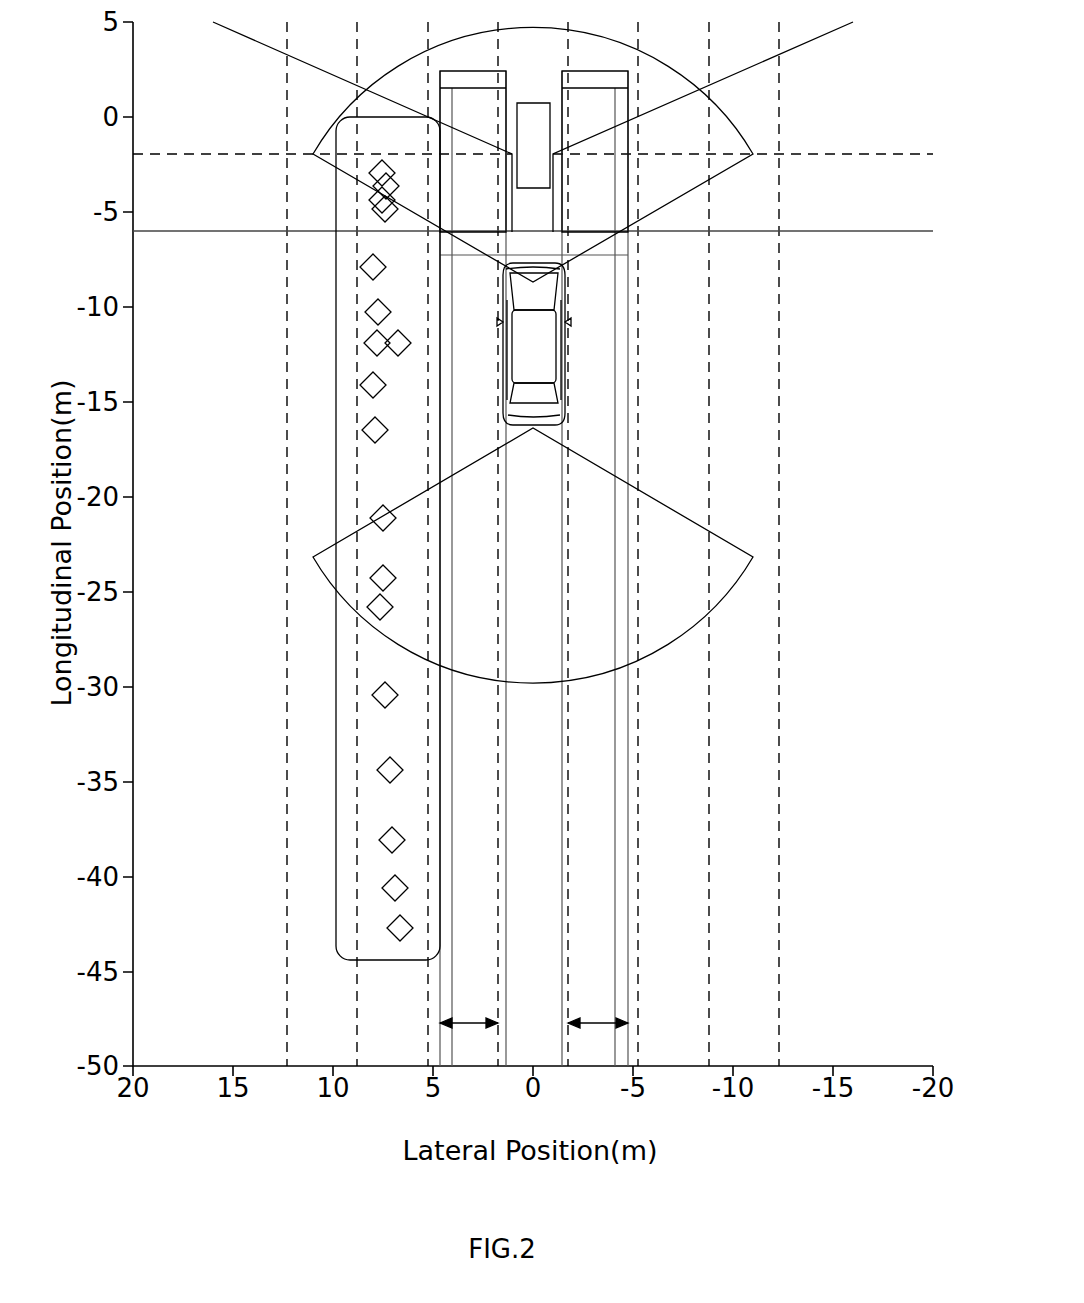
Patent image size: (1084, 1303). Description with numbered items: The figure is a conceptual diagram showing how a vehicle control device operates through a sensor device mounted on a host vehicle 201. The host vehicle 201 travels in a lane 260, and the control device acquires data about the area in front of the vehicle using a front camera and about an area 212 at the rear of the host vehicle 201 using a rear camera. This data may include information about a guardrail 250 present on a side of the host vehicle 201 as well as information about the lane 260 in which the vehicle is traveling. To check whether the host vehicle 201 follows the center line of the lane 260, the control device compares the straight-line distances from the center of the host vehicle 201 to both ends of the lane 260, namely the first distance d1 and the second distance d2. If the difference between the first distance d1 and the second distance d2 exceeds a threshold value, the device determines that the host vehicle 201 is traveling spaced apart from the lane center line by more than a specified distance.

The host vehicle 201 is at (542, 357).
The area including an area at the rear of the host vehicle 212 is at (688, 567).
The guardrail 250 is at (348, 463).
The lane 260 is at (543, 1041).
The first distance d1 is at (472, 1026).
The second distance d2 is at (600, 1026).